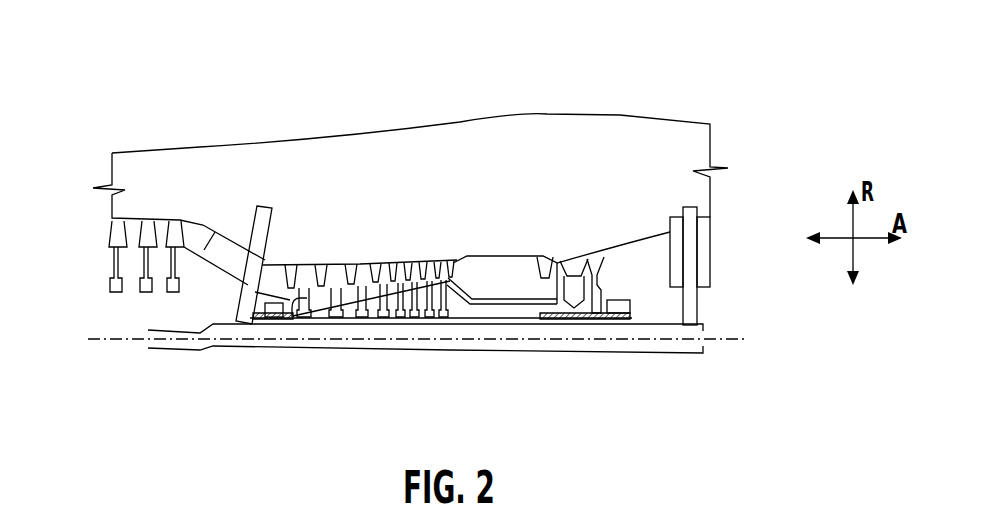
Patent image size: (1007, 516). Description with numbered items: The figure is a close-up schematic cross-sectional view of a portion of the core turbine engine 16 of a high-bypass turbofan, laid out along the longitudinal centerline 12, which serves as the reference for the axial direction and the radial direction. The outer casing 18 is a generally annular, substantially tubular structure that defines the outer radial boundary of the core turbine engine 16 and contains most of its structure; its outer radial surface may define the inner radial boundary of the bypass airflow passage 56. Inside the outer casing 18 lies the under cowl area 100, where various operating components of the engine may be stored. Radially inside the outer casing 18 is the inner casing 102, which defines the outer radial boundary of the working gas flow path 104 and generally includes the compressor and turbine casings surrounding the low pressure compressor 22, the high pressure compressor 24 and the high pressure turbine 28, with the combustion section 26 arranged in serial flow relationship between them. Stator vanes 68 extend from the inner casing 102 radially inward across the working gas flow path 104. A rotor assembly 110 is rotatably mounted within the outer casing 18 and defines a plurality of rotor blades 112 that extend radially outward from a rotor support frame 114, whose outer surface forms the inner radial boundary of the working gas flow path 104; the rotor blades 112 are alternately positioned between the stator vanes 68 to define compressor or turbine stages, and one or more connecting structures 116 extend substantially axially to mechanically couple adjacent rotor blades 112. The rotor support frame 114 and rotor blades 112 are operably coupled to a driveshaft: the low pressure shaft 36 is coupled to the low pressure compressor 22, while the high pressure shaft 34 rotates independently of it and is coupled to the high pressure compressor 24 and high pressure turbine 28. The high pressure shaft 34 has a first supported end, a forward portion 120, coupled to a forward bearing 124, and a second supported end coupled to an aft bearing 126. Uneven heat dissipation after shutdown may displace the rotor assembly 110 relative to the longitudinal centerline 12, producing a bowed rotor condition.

The longitudinal centerline 12 is at (727, 345).
The core turbine engine 16 is at (683, 48).
The outer casing 18 is at (543, 113).
The low pressure compressor 22 is at (160, 195).
The high pressure compressor 24 is at (371, 214).
The combustion section 26 is at (518, 291).
The high pressure turbine 28 is at (577, 222).
The high pressure shaft 34 is at (391, 322).
The low pressure shaft 36 is at (346, 356).
The bypass airflow passage 56 is at (439, 81).
The stator vanes 68 is at (325, 265).
The under cowl area 100 is at (457, 173).
The inner casing 102 is at (483, 255).
The working gas flow path 104 is at (291, 262).
The rotor assembly 110 is at (525, 328).
The rotor blades 112 is at (401, 259).
The rotor support frame 114 is at (434, 332).
The connecting structures 116 is at (356, 320).
The forward portion 120 is at (289, 346).
The forward bearing 124 is at (243, 310).
The aft bearing 126 is at (614, 298).